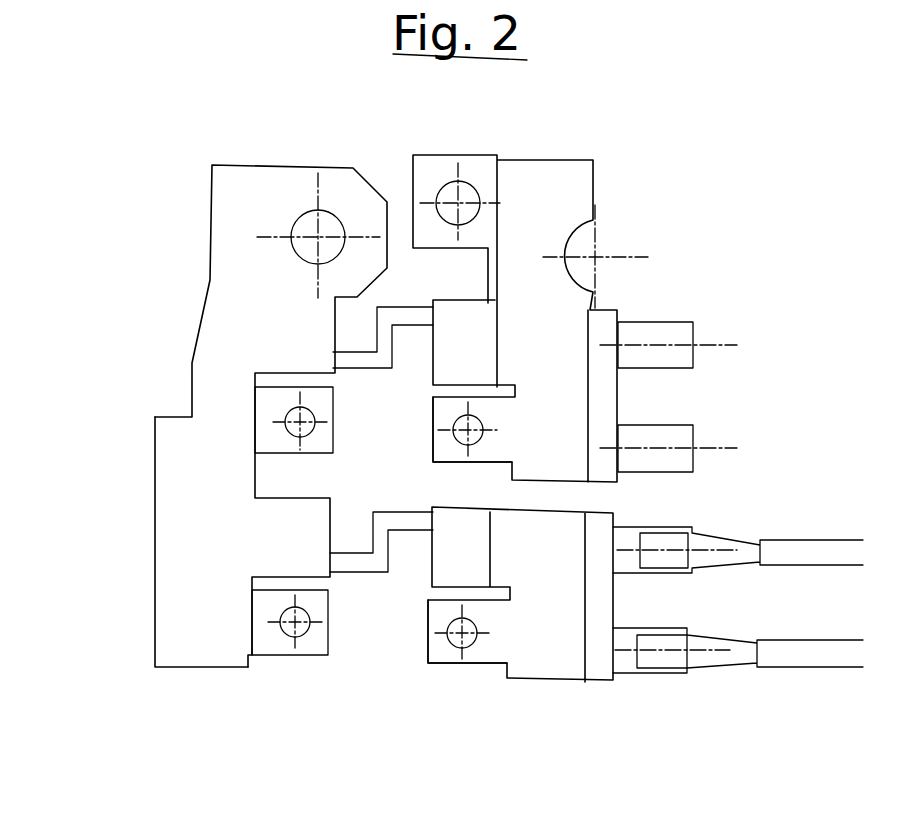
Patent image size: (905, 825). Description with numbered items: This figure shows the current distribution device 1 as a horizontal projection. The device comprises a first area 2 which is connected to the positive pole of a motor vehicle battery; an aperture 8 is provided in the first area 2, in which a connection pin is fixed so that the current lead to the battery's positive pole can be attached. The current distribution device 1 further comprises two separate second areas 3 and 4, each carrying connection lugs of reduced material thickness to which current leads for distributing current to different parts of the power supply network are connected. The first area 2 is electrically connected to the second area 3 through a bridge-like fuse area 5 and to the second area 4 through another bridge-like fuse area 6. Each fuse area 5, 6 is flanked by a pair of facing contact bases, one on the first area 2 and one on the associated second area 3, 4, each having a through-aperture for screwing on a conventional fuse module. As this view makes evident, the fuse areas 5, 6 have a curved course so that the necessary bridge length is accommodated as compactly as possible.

The current distribution device 1 is at (145, 515).
The first area 2 is at (192, 622).
The second area 3 is at (537, 228).
The second area 4 is at (532, 648).
The fuse area 5 is at (397, 307).
The fuse area 6 is at (372, 575).
The aperture 8 is at (306, 232).